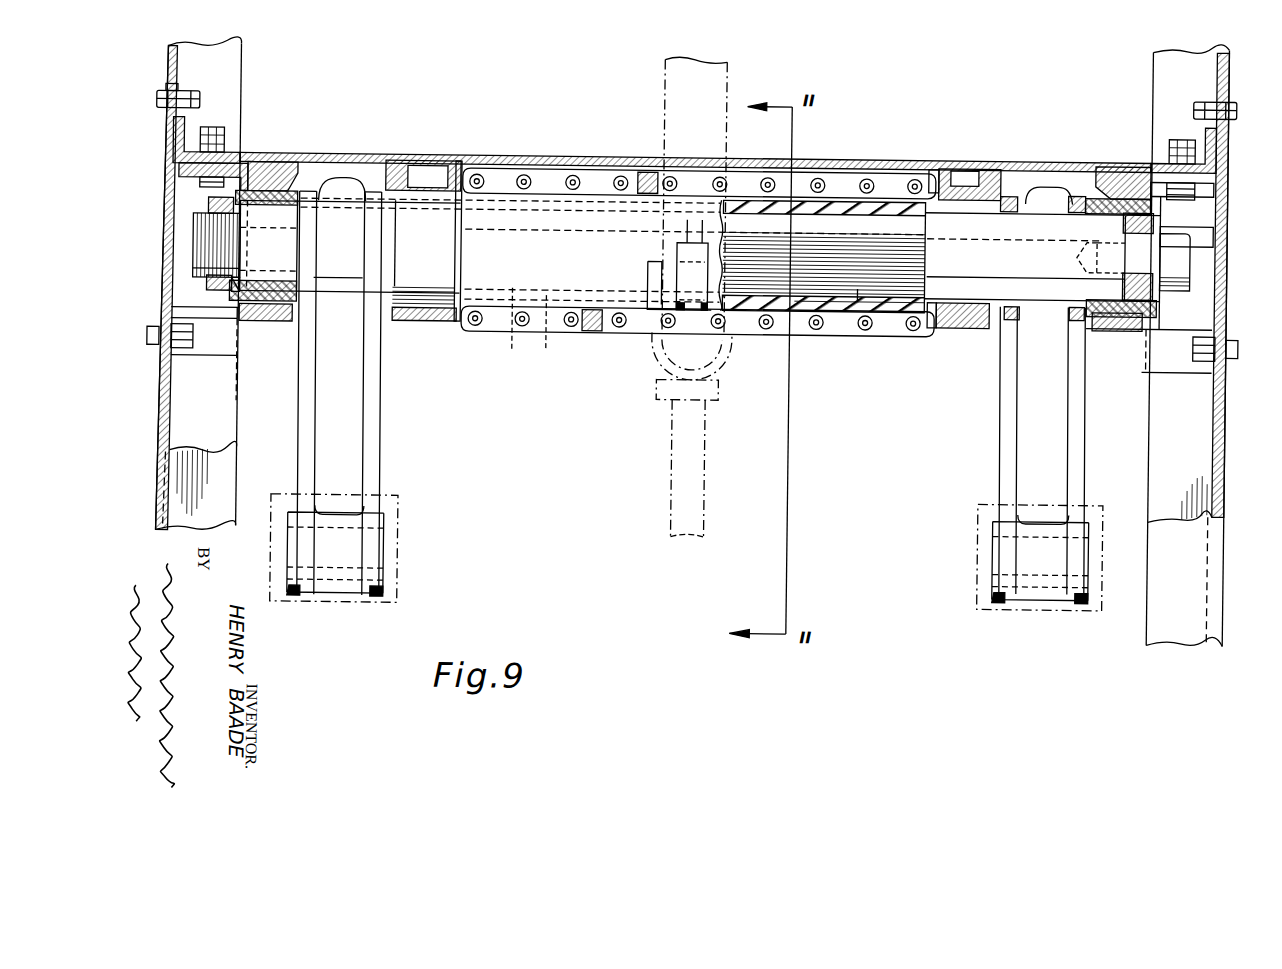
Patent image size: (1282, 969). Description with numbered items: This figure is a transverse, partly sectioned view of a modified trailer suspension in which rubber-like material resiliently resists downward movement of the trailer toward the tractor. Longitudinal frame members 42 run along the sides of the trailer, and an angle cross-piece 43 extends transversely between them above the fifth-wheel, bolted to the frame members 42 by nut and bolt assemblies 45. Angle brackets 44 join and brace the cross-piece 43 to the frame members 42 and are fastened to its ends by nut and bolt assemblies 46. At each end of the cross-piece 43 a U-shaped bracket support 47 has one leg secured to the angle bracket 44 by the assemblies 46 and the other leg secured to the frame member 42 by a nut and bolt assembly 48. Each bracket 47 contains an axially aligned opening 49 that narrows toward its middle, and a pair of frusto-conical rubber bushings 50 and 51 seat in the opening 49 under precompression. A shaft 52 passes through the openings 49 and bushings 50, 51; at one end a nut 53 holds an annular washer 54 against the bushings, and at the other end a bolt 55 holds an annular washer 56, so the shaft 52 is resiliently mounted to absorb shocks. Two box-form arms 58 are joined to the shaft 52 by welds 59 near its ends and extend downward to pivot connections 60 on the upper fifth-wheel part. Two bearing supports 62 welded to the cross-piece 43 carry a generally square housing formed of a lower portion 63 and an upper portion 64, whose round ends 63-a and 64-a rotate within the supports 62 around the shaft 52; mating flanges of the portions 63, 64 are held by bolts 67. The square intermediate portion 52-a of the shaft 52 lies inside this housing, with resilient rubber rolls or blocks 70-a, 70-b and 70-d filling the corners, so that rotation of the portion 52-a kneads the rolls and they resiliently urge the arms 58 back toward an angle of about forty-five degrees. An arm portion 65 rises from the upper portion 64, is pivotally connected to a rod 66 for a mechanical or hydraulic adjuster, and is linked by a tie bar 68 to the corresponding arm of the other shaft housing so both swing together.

The longitudinal frame member 42 is at (162, 385).
The angle cross-piece 43 is at (270, 158).
The angle bracket 44 is at (180, 146).
The nut and bolt assembly 45 is at (195, 102).
The nut and bolt assembly 46 is at (222, 140).
The U-shaped bracket support 47 is at (240, 188).
The nut and bolt assembly 48 is at (164, 333).
The axially aligned opening 49 is at (290, 185).
The rubber bushing 50 is at (262, 327).
The rubber bushing 51 is at (284, 307).
The shaft 52 is at (200, 254).
The square intermediate shaft portion 52-a is at (858, 288).
The nut 53 is at (210, 289).
The annular washer 54 is at (234, 300).
The bolt 55 is at (1183, 280).
The annular washer 56 is at (1155, 305).
The arm 58 is at (380, 168).
The weld 59 is at (364, 198).
The pivot connection 60 is at (389, 552).
The bearing support 62 is at (393, 163).
The lower housing portion 63 is at (888, 200).
The round housing end 63-a is at (934, 170).
The upper housing portion 64 is at (596, 336).
The round housing end 64-a is at (442, 284).
The arm portion 65 is at (685, 282).
The rod 66 is at (674, 414).
The bolt 67 is at (573, 177).
The tie bar 68 is at (663, 83).
The rubber roll or block 70-a is at (538, 334).
The rubber roll or block 70-b is at (742, 202).
The rubber roll or block 70-d is at (795, 302).